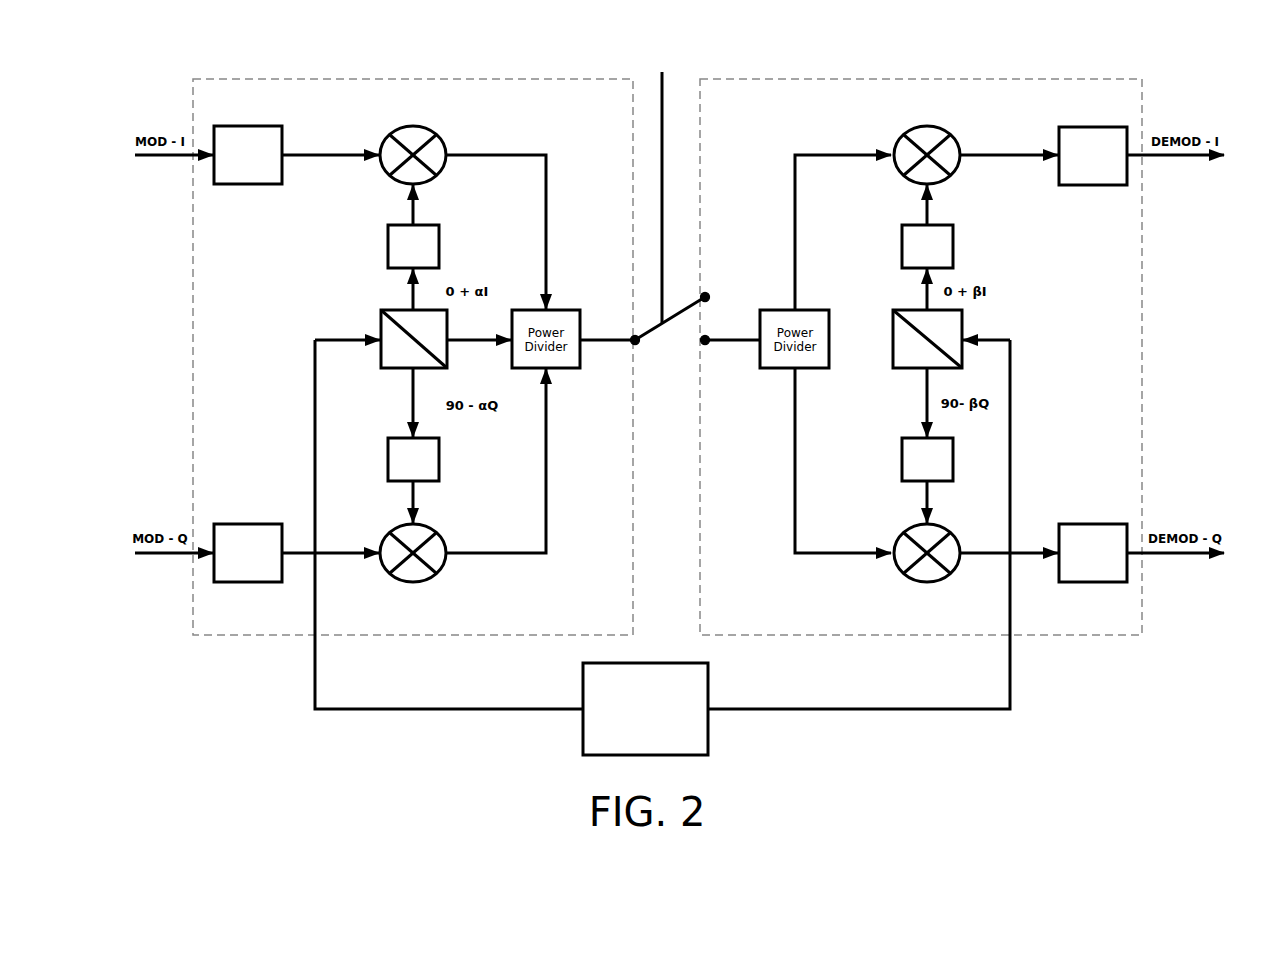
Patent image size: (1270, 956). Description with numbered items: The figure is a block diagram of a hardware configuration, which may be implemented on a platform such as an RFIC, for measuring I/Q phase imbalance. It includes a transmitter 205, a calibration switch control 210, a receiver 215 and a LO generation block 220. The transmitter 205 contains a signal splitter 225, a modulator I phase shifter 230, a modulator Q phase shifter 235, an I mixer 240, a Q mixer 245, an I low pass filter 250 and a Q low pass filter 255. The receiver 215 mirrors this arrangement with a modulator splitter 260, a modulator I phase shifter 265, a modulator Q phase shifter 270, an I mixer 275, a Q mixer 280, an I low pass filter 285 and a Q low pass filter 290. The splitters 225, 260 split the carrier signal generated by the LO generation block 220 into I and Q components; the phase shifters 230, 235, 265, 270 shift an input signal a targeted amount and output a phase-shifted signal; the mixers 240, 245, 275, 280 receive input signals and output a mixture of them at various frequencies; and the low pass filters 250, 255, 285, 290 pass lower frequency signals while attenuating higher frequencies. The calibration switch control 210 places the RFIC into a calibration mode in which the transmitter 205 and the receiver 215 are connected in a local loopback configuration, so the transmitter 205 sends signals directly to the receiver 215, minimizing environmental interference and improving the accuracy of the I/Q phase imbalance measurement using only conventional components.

The transmitter 205 is at (495, 122).
The calibration switch control 210 is at (670, 191).
The receiver 215 is at (872, 83).
The LO generation block 220 is at (645, 709).
The signal splitter 225 is at (372, 331).
The modulator I phase shifter 230 is at (383, 246).
The modulator Q phase shifter 235 is at (384, 464).
The I mixer 240 is at (413, 125).
The Q mixer 245 is at (413, 583).
The I low pass filter 250 is at (259, 126).
The Q low pass filter 255 is at (245, 584).
The modulator splitter 260 is at (966, 328).
The modulator I phase shifter 265 is at (956, 244).
The modulator Q phase shifter 270 is at (956, 480).
The I mixer 275 is at (927, 125).
The Q mixer 280 is at (925, 583).
The I low pass filter 285 is at (1090, 126).
The Q low pass filter 290 is at (1093, 584).